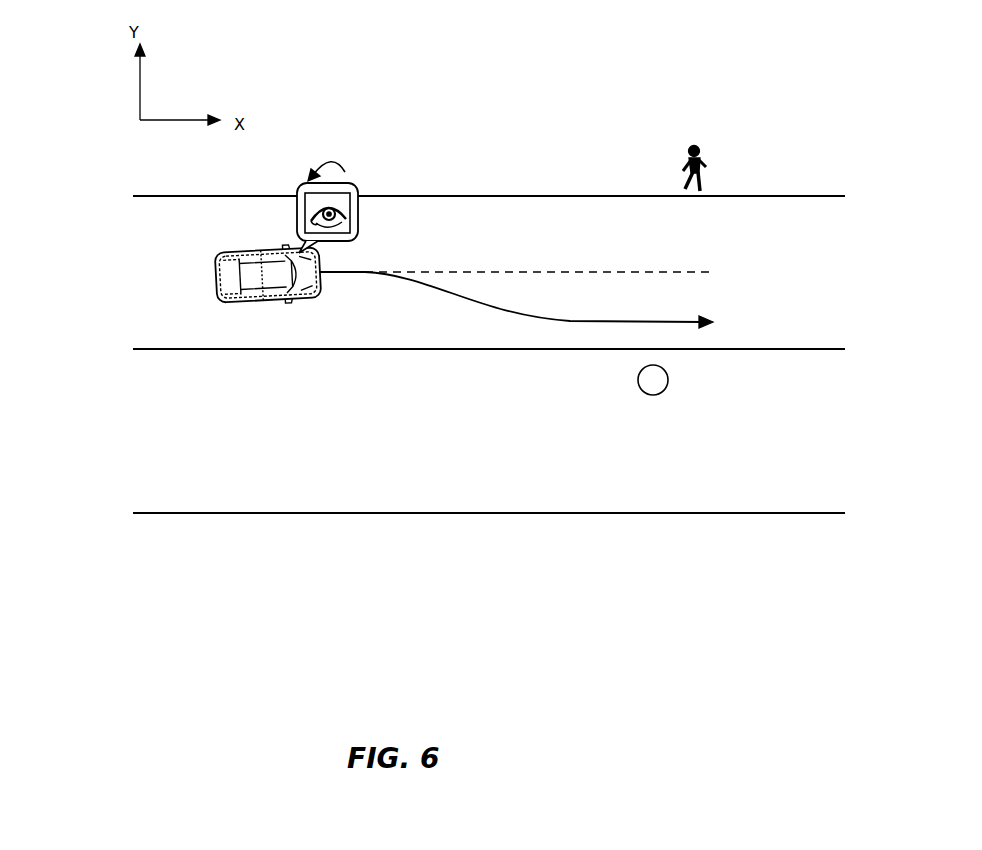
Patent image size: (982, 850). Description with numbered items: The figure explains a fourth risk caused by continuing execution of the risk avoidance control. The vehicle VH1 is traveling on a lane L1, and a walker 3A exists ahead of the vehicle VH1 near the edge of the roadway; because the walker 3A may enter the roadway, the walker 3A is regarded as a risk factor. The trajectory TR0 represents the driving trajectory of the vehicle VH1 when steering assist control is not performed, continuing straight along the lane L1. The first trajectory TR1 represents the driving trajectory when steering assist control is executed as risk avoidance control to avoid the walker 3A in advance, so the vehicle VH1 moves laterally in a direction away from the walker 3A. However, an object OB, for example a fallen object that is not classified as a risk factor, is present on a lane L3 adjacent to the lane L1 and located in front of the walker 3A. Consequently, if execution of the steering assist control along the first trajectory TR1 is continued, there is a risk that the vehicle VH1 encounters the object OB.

The vehicle VH1 is at (257, 250).
The walker 3A is at (703, 162).
The object OB is at (650, 395).
The trajectory TR0 is at (534, 273).
The first trajectory TR1 is at (556, 302).
The lane L1 is at (436, 272).
The lane L3 is at (436, 465).